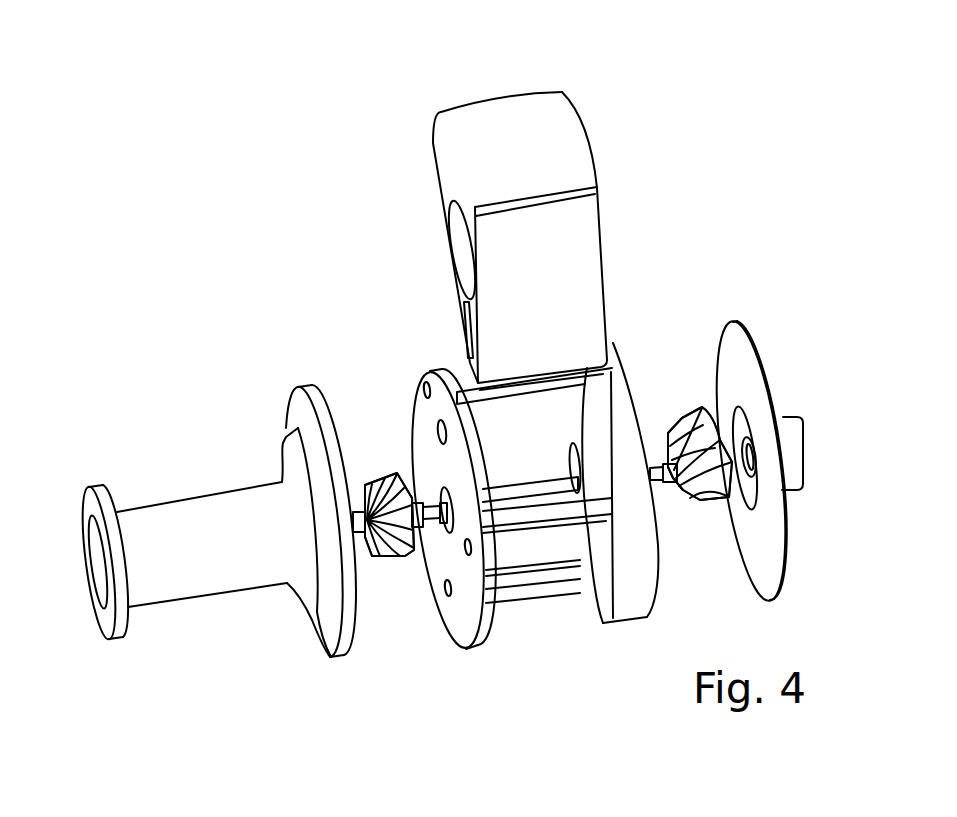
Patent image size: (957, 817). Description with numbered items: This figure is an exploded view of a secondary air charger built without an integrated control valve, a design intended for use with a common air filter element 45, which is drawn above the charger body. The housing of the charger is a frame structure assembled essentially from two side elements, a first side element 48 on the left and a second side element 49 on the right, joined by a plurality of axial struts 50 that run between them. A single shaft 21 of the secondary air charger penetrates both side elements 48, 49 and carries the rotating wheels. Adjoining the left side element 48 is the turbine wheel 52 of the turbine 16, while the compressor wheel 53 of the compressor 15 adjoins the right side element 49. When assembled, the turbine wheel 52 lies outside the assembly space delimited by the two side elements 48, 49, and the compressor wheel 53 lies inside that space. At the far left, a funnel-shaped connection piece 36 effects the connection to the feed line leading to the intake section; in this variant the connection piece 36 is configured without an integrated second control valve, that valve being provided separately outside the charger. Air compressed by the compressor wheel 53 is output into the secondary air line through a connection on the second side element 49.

The air filter element 45 is at (503, 132).
The first side element 48 is at (482, 635).
The shaft 21 is at (527, 494).
The axial struts 50 is at (543, 550).
The second side element 49 is at (643, 602).
The turbine wheel 52 is at (400, 563).
The turbine 16 is at (389, 514).
The compressor wheel 53 is at (697, 428).
The compressor 15 is at (700, 453).
The connection piece 36 is at (178, 523).